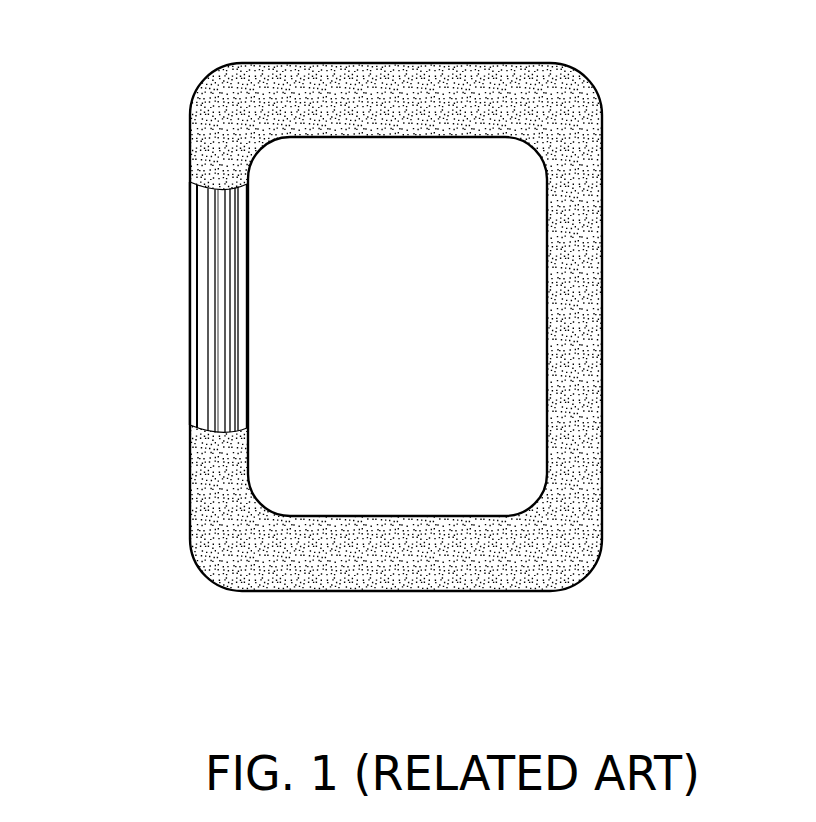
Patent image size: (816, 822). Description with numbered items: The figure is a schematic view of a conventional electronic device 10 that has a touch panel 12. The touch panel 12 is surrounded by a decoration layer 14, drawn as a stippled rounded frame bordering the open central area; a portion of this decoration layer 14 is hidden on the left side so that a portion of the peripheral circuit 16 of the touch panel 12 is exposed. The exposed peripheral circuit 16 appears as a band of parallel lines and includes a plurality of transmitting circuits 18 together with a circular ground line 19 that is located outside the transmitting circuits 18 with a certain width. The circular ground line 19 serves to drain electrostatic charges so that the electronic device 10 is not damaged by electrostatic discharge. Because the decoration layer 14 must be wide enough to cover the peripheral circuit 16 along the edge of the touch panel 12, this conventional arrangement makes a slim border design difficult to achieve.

The electronic device 10 is at (417, 301).
The touch panel 12 is at (380, 327).
The decoration layer 14 is at (602, 190).
The peripheral circuit 16 is at (155, 307).
The transmitting circuits 18 is at (217, 245).
The circular ground line 19 is at (110, 235).